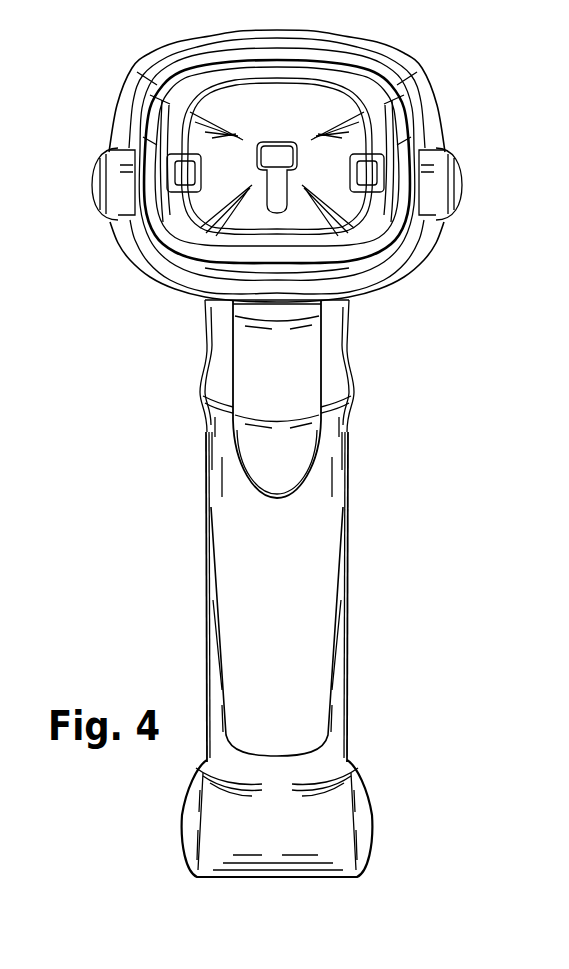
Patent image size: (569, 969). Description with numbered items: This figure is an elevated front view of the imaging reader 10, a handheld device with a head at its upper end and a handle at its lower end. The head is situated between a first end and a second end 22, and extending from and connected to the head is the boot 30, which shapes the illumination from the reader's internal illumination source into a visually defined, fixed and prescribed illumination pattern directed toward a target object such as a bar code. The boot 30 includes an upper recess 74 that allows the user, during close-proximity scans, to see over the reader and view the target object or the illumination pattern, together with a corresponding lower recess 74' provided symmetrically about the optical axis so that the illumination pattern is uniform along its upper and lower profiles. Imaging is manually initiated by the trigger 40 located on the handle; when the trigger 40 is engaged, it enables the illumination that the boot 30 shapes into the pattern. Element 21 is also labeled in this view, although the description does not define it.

The imaging reader 10 is at (457, 60).
The handle 21 is at (310, 548).
The second end 22 is at (226, 44).
The boot 30 is at (287, 267).
The trigger 40 is at (282, 361).
The upper recess 74 is at (284, 155).
The lower recess 74' is at (264, 197).